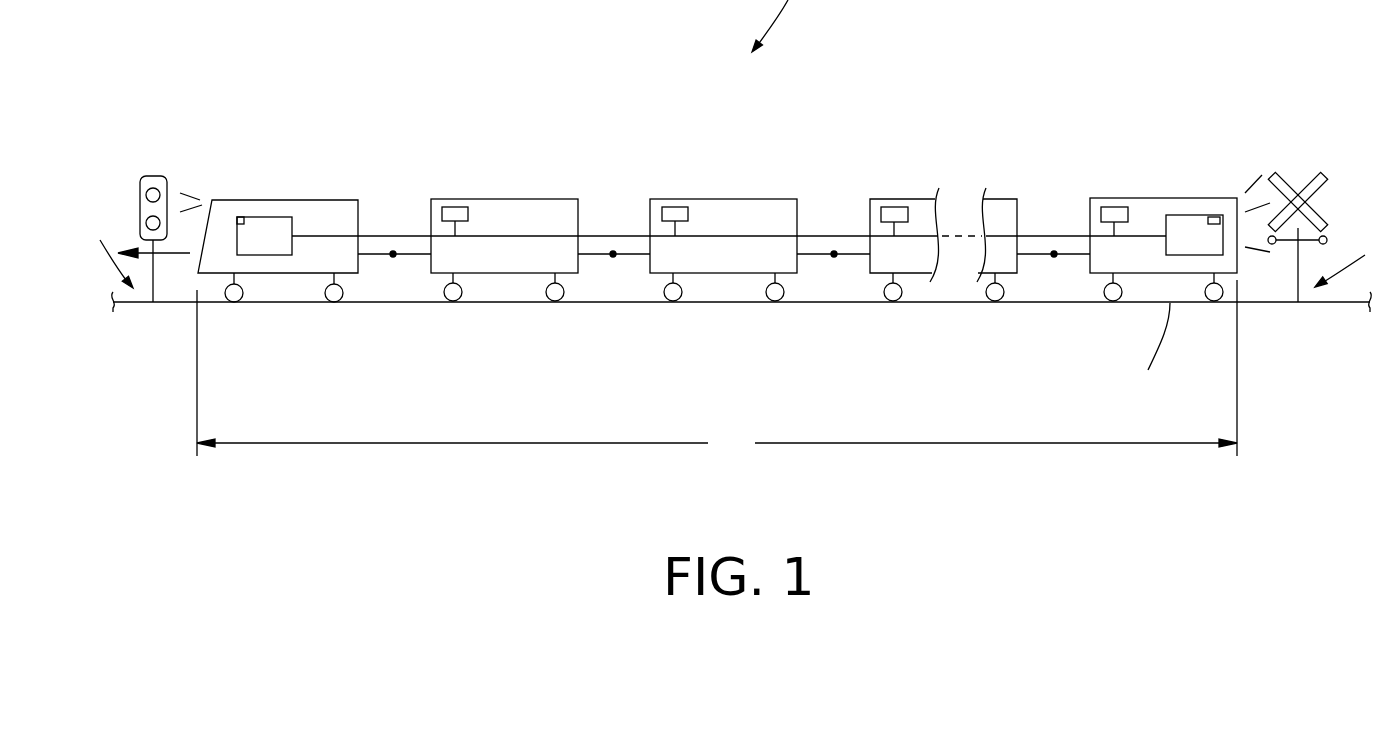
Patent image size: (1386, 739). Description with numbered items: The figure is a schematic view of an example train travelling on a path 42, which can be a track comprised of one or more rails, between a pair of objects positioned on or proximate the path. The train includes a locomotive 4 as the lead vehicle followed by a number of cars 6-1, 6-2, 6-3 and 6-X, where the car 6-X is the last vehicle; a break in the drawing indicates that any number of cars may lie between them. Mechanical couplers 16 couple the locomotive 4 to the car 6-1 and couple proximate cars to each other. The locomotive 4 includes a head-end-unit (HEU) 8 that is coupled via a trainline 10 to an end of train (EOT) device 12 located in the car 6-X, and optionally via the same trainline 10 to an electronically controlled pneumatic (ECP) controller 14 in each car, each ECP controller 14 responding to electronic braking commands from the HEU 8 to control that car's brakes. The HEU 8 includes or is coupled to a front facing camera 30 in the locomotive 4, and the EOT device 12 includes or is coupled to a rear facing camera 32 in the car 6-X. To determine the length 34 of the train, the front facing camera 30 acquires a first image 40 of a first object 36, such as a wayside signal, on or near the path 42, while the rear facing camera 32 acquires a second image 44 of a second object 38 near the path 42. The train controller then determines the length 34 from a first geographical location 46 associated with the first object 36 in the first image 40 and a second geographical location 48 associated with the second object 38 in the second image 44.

The locomotive 4 is at (287, 199).
The car 6-1 is at (505, 199).
The car 6-2 is at (718, 199).
The car 6-3 is at (923, 198).
The car 6-X is at (1163, 198).
The head-end-unit (HEU) 8 is at (248, 217).
The trainline 10 is at (383, 234).
The end of train (EOT) device 12 is at (1178, 215).
The electronically controlled pneumatic (ECP) controller 14 is at (458, 207).
The mechanical coupler 16 is at (393, 258).
The front facing camera 30 is at (237, 221).
The rear facing camera 32 is at (1215, 217).
The length 34 is at (717, 368).
The first object 36 is at (140, 183).
The second object 38 is at (1312, 200).
The first image 40 is at (207, 197).
The path 42 is at (497, 303).
The second image 44 is at (1252, 250).
The first geographical location 46 is at (111, 254).
The second geographical location 48 is at (1348, 259).